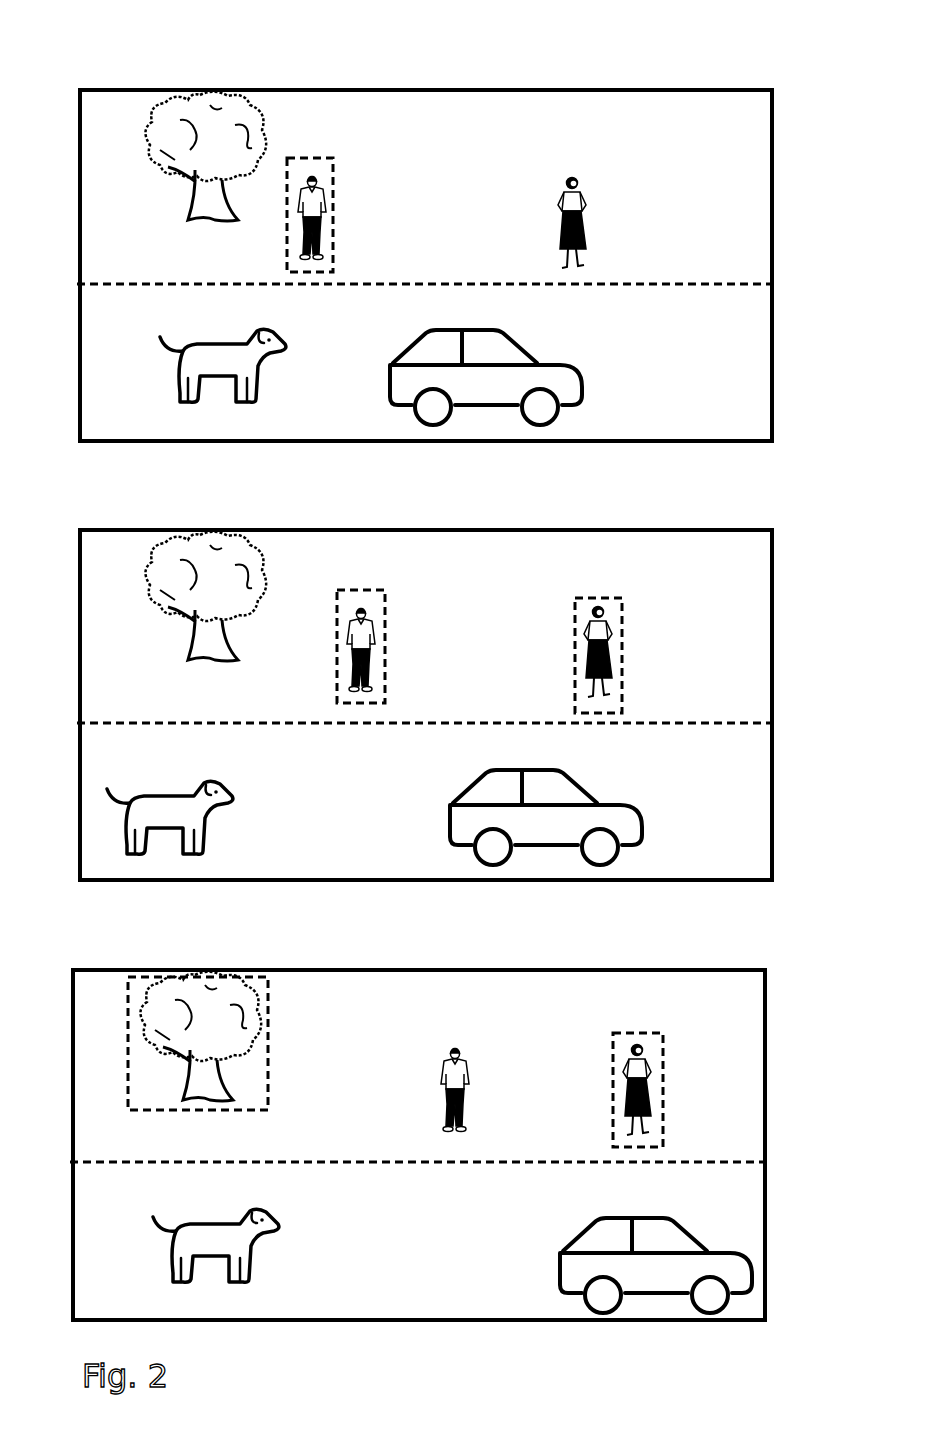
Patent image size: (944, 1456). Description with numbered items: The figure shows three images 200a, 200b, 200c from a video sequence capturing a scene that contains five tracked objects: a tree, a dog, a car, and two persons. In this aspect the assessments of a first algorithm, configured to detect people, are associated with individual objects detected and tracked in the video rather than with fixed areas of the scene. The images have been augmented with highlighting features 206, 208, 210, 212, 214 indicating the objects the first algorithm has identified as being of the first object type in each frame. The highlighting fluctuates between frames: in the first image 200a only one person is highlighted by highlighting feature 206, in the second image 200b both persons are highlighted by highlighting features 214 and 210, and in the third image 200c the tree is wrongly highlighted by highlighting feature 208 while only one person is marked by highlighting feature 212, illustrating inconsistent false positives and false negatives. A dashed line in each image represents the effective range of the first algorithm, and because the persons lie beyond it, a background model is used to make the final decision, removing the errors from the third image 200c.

The first image 200a is at (652, 90).
The second image 200b is at (652, 530).
The third image 200c is at (645, 970).
The highlighting feature 206 is at (333, 255).
The highlighting feature 208 is at (268, 1017).
The highlighting feature 210 is at (623, 618).
The highlighting feature 212 is at (663, 1045).
The highlighting feature 214 is at (385, 607).